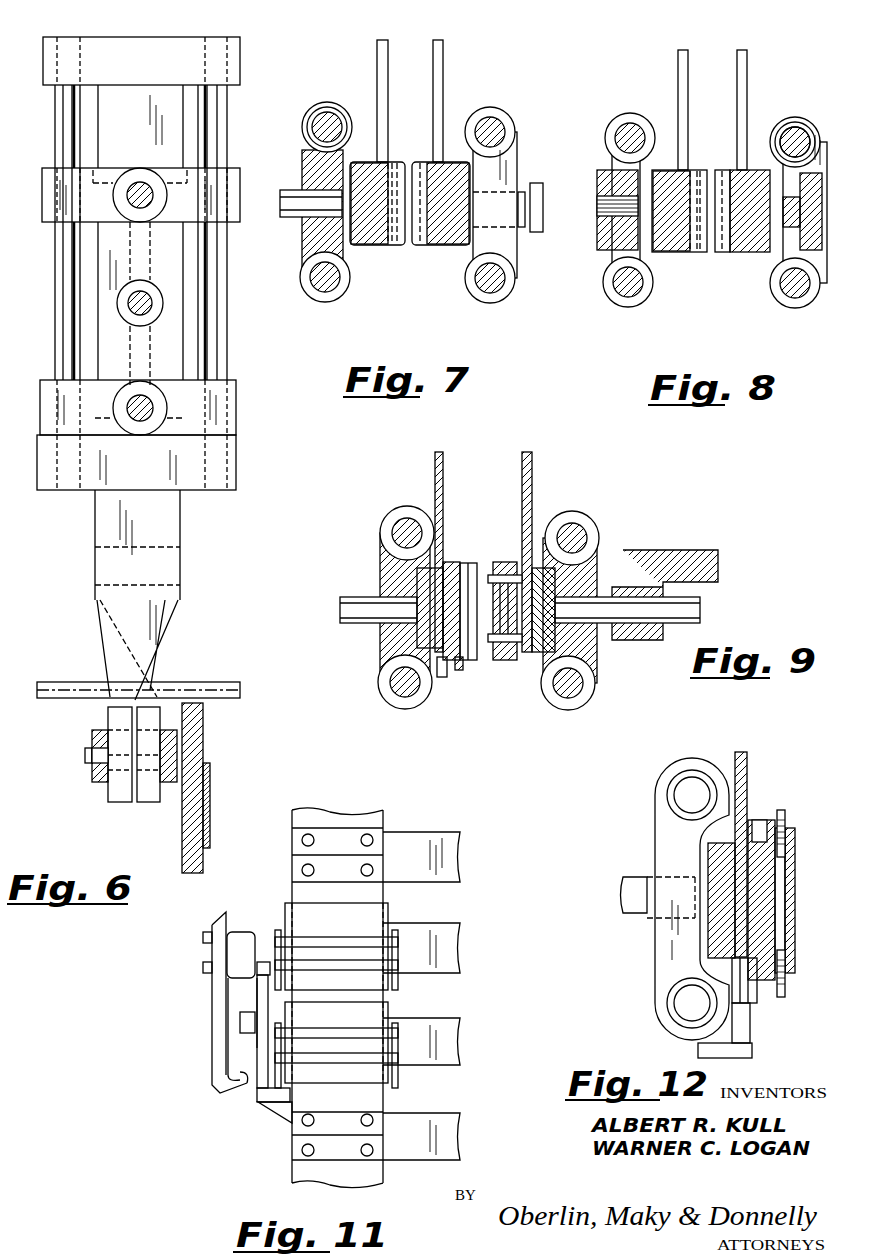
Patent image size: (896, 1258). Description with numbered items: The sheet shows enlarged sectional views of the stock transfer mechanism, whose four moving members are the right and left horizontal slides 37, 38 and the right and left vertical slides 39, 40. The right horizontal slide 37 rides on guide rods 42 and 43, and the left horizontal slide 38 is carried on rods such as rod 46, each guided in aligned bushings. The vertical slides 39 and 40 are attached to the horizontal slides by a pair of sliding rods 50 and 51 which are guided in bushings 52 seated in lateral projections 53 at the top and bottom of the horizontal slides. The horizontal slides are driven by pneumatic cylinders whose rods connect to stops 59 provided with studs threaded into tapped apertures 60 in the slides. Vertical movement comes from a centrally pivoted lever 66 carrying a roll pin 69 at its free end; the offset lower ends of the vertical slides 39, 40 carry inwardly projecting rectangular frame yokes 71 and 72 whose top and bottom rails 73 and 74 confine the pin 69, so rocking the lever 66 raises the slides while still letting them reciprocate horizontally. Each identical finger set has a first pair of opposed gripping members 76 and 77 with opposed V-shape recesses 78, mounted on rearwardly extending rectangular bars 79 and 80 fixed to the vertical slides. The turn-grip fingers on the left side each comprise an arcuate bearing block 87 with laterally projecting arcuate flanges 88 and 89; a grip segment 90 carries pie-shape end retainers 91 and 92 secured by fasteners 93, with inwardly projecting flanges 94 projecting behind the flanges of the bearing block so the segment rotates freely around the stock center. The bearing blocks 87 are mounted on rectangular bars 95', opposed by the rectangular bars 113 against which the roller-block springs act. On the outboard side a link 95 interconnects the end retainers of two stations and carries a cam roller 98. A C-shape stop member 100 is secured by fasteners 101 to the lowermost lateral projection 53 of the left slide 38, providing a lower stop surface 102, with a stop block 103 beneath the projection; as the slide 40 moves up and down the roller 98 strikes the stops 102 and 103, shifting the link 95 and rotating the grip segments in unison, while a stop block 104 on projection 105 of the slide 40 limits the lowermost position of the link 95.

In FIG. 6, the right horizontal slide 37 is at (183, 286).
In FIG. 7, the right horizontal slide 37 is at (515, 135).
In FIG. 8, the right horizontal slide 37 is at (820, 240).
In FIG. 9, the right horizontal slide 37 is at (580, 590).
In FIG. 7, the left horizontal slide 38 is at (305, 152).
In FIG. 8, the left horizontal slide 38 is at (605, 235).
In FIG. 9, the left horizontal slide 38 is at (382, 565).
In FIG. 6, the right vertical slide 39 is at (180, 522).
In FIG. 8, the right vertical slide 39 is at (755, 253).
In FIG. 9, the right vertical slide 39 is at (542, 652).
In FIG. 7, the left vertical slide 40 is at (365, 248).
In FIG. 8, the left vertical slide 40 is at (665, 253).
In FIG. 9, the left vertical slide 40 is at (430, 570).
In FIG. 11, the left vertical slide 40 is at (357, 815).
In FIG. 12, the left vertical slide 40 is at (712, 945).
In FIG. 6, the guide rod 42 is at (140, 183).
In FIG. 6, the guide rod 43 is at (140, 425).
In FIG. 7, the rod 46 is at (284, 212).
In FIG. 6, the sliding rod 50 is at (63, 108).
In FIG. 6, the sliding rod 51 is at (217, 118).
In FIG. 6, the bushing 52 is at (225, 415).
In FIG. 7, the bushing 52 is at (318, 110).
In FIG. 8, the bushing 52 is at (788, 128).
In FIG. 11, the bushing 52 is at (243, 940).
In FIG. 6, the lateral projection 53 is at (230, 385).
In FIG. 7, the lateral projection 53 is at (330, 103).
In FIG. 8, the lateral projection 53 is at (802, 115).
In FIG. 6, the stop 59 is at (135, 318).
In FIG. 8, the tapped aperture 60 is at (597, 200).
In FIG. 6, the lever 66 is at (95, 732).
In FIG. 6, the roll pin 69 is at (110, 795).
In FIG. 6, the rectangular frame yoke 71 is at (120, 805).
In FIG. 6, the rectangular frame yoke 72 is at (150, 805).
In FIG. 6, the top rail 73 is at (190, 685).
In FIG. 6, the bottom rail 74 is at (165, 805).
In FIG. 7, the gripping member 76 is at (392, 165).
In FIG. 8, the gripping member 76 is at (698, 253).
In FIG. 11, the gripping member 76 is at (320, 830).
In FIG. 7, the gripping member 77 is at (418, 248).
In FIG. 8, the gripping member 77 is at (724, 178).
In FIG. 11, the V-shape recess 78 is at (295, 850).
In FIG. 7, the rectangular bar 79 is at (445, 60).
In FIG. 8, the rectangular bar 79 is at (747, 65).
In FIG. 7, the rectangular bar 80 is at (388, 50).
In FIG. 8, the rectangular bar 80 is at (688, 70).
In FIG. 11, the rectangular bar 80 is at (440, 840).
In FIG. 9, the arcuate bearing block 87 is at (470, 565).
In FIG. 12, the arcuate bearing block 87 is at (785, 870).
In FIG. 9, the arcuate flange 88 is at (452, 565).
In FIG. 12, the arcuate flange 88 is at (765, 830).
In FIG. 9, the arcuate flange 89 is at (462, 672).
In FIG. 12, the arcuate flange 89 is at (760, 990).
In FIG. 9, the grip segment 90 is at (498, 660).
In FIG. 12, the grip segment 90 is at (793, 915).
In FIG. 12, the pie-shape end retainer 91 is at (760, 820).
In FIG. 12, the pie-shape end retainer 92 is at (785, 985).
In FIG. 12, the fastener 93 is at (785, 815).
In FIG. 12, the inwardly projecting flange 94 is at (703, 845).
In FIG. 9, the link 95 is at (456, 689).
In FIG. 11, the link 95 is at (215, 1031).
In FIG. 12, the link 95 is at (746, 1030).
In FIG. 9, the rectangular bar 95' is at (416, 552).
In FIG. 12, the rectangular bar 95' is at (716, 838).
In FIG. 11, the cam roller 98 is at (240, 1022).
In FIG. 11, the C-shape stop member 100 is at (215, 1057).
In FIG. 11, the fastener 101 is at (212, 950).
In FIG. 11, the lower stop surface 102 is at (238, 1098).
In FIG. 11, the stop block 103 is at (230, 990).
In FIG. 11, the stop block 104 is at (262, 1098).
In FIG. 11, the projection 105 is at (282, 1130).
In FIG. 9, the rectangular bar 113 is at (532, 465).